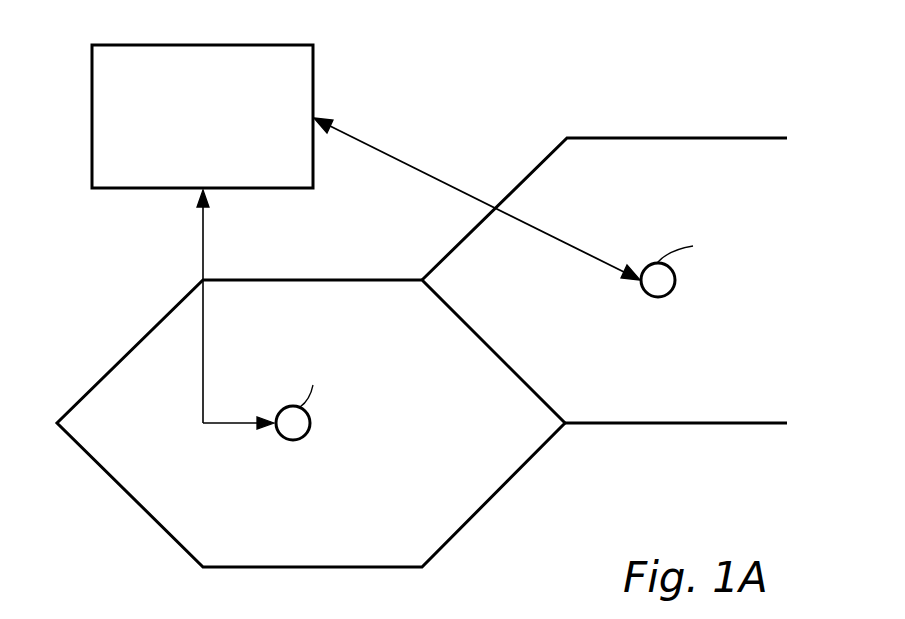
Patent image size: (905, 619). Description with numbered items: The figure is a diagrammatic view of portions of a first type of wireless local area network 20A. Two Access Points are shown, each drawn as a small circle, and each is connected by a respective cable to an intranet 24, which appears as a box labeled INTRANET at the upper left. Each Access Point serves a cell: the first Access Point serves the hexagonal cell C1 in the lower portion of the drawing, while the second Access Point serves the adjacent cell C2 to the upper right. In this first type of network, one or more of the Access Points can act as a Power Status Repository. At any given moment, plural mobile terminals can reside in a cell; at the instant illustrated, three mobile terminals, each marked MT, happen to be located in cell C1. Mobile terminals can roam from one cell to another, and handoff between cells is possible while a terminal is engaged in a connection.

The wireless local area network 20A is at (422, 286).
The intranet 24 is at (210, 45).
The cell C1 is at (493, 497).
The cell C2 is at (687, 424).